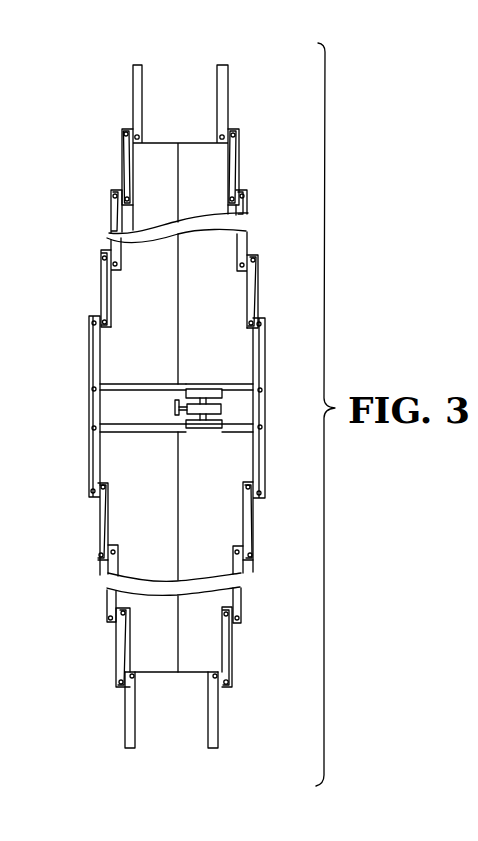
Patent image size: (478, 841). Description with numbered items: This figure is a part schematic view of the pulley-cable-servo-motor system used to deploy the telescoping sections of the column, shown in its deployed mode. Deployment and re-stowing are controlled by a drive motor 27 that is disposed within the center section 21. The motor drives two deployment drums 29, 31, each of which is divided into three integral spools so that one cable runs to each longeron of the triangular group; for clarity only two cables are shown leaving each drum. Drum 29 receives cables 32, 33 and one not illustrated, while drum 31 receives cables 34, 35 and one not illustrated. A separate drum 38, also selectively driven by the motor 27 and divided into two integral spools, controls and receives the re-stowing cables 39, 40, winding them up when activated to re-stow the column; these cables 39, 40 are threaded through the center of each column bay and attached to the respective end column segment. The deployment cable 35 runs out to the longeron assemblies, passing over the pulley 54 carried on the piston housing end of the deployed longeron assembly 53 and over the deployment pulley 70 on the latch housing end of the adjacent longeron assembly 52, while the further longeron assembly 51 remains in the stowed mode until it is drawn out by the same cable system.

The center section 21 is at (95, 409).
The drive motor 27 is at (221, 412).
The drum 29 is at (204, 389).
The drum 31 is at (201, 430).
The cable 32 is at (133, 392).
The cable 33 is at (238, 393).
The cable 34 is at (136, 426).
The cable 35 is at (237, 428).
The drum 38 is at (174, 406).
The re-stowing cable 39 is at (180, 329).
The re-stowing cable 40 is at (176, 492).
The longeron assembly 51 is at (241, 609).
The longeron assembly 52 is at (233, 645).
The longeron assembly 53 is at (223, 723).
The pulley 54 is at (209, 674).
The deployment pulley 70 is at (237, 683).